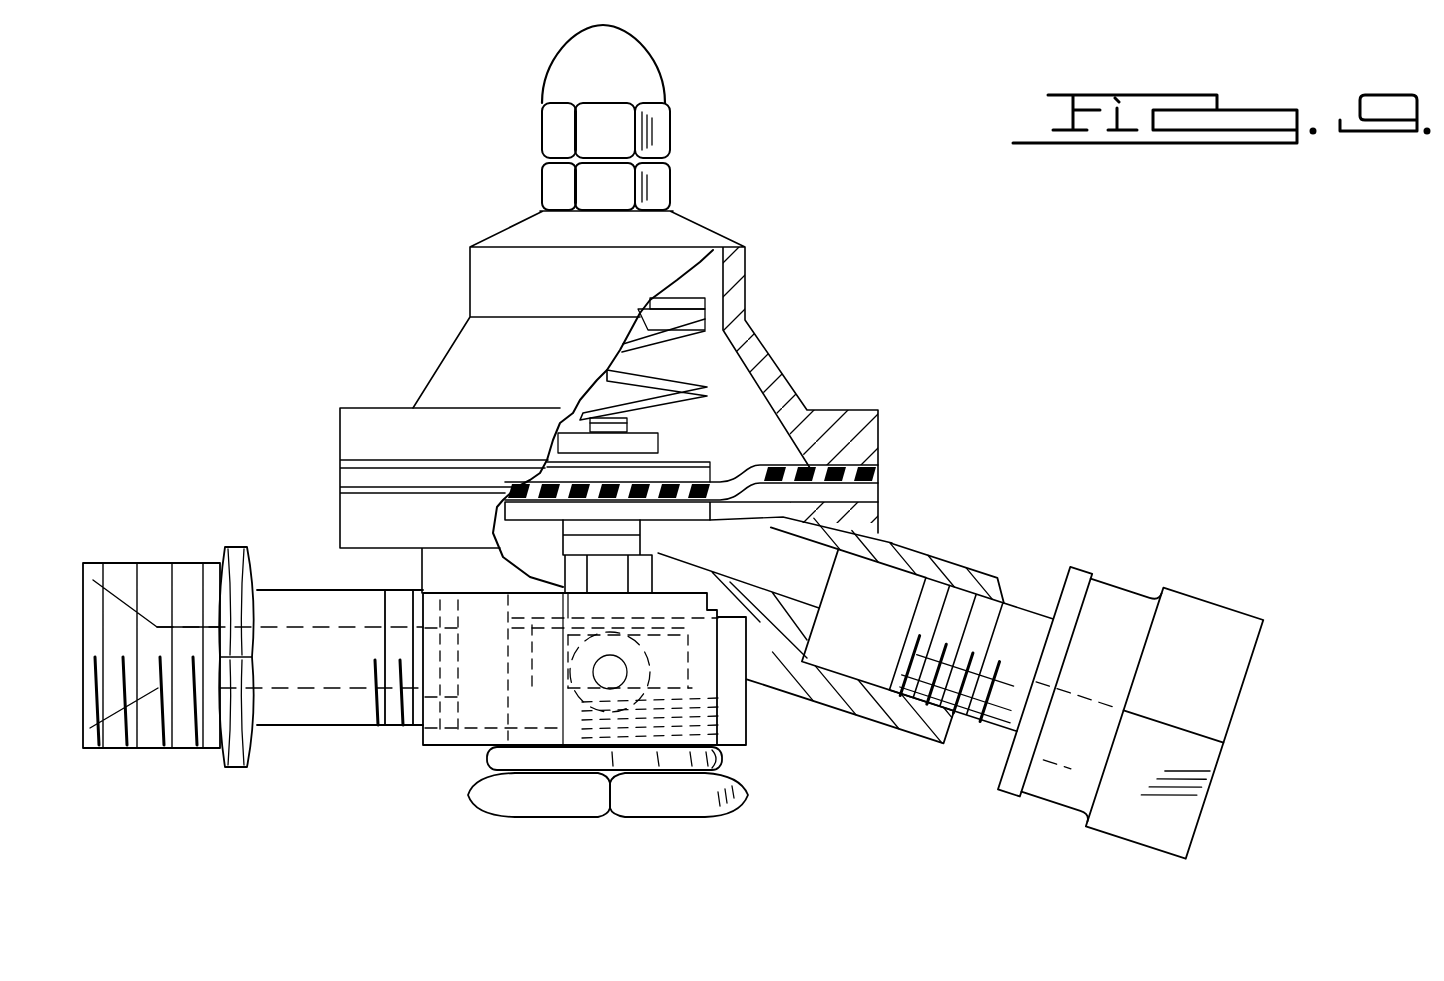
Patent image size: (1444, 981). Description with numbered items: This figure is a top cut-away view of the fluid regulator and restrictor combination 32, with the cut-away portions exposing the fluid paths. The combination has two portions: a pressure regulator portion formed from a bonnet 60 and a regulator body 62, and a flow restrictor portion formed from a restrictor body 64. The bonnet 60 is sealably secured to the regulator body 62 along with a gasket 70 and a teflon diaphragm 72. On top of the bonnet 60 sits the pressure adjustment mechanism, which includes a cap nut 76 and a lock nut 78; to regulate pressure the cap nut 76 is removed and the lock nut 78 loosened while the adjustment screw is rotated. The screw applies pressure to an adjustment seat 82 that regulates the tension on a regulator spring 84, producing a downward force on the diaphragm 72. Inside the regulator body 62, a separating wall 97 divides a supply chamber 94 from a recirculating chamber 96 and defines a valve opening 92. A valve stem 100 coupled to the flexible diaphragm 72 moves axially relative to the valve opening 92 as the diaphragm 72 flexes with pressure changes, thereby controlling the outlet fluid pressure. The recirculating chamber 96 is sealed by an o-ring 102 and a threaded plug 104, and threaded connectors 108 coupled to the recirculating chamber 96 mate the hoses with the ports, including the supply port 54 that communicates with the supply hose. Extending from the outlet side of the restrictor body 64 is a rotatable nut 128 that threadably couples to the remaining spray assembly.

The fluid regulator and restrictor combination 32 is at (327, 106).
The supply port 54 is at (118, 577).
The bonnet 60 is at (755, 357).
The regulator body 62 is at (360, 508).
The restrictor body 64 is at (1007, 720).
The gasket 70 is at (883, 462).
The teflon diaphragm 72 is at (873, 478).
The cap nut 76 is at (658, 123).
The lock nut 78 is at (660, 177).
The adjustment seat 82 is at (693, 300).
The regulator spring 84 is at (707, 315).
The valve opening 92 is at (673, 447).
The supply chamber 94 is at (877, 502).
The recirculating chamber 96 is at (745, 680).
The separating wall 97 is at (900, 527).
The valve stem 100 is at (620, 573).
The o-ring 102 is at (500, 760).
The threaded plug 104 is at (503, 795).
The threaded connectors 108 is at (237, 760).
The rotatable nut 128 is at (1212, 612).